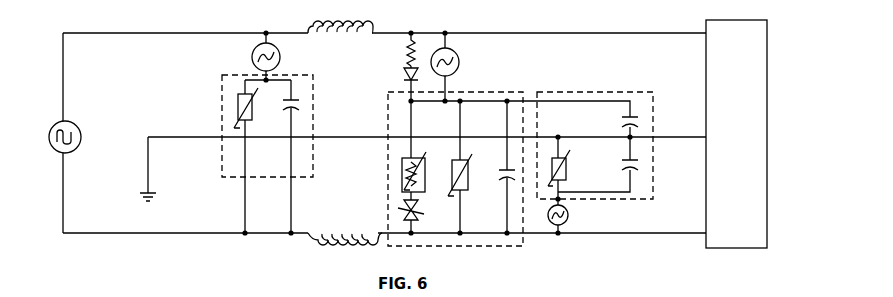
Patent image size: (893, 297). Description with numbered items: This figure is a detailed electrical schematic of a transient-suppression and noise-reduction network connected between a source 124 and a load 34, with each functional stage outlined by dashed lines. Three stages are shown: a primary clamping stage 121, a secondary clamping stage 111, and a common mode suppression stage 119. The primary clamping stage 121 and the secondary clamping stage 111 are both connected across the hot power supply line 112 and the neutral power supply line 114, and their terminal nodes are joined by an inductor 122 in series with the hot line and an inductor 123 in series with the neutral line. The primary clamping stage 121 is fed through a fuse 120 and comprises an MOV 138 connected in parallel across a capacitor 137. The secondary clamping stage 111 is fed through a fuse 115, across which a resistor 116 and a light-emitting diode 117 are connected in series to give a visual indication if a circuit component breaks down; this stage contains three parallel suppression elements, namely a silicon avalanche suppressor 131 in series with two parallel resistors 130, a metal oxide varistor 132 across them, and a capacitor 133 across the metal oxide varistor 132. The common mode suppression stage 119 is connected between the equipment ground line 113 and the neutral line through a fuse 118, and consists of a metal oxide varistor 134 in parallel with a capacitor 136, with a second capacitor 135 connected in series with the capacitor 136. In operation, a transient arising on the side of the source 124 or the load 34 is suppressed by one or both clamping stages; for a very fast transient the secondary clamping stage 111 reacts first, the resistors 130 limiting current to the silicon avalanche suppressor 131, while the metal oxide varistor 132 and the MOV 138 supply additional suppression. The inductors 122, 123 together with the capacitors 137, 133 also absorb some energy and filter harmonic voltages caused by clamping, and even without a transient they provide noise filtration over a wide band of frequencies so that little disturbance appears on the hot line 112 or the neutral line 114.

The load 34 is at (767, 200).
The secondary clamping stage 111 is at (498, 92).
The hot power supply line 112 is at (567, 33).
The equipment ground line 113 is at (668, 137).
The neutral power supply line 114 is at (600, 233).
The fuse 115 is at (460, 58).
The resistor 116 is at (405, 52).
The light-emitting diode 117 is at (404, 74).
The fuse 118 is at (568, 214).
The common mode suppression stage 119 is at (608, 92).
The fuse 120 is at (281, 55).
The primary clamping stage 121 is at (313, 107).
The inductor 122 is at (345, 26).
The inductor 123 is at (322, 240).
The source 124 is at (77, 127).
The resistors 130 is at (426, 152).
The silicon avalanche suppressor 131 is at (418, 212).
The metal oxide varistor 132 is at (474, 150).
The capacitor 133 is at (506, 180).
The metal oxide varistor 134 is at (566, 172).
The second capacitor 135 is at (621, 118).
The capacitor 136 is at (622, 162).
The capacitor 137 is at (288, 112).
The MOV 138 is at (234, 100).